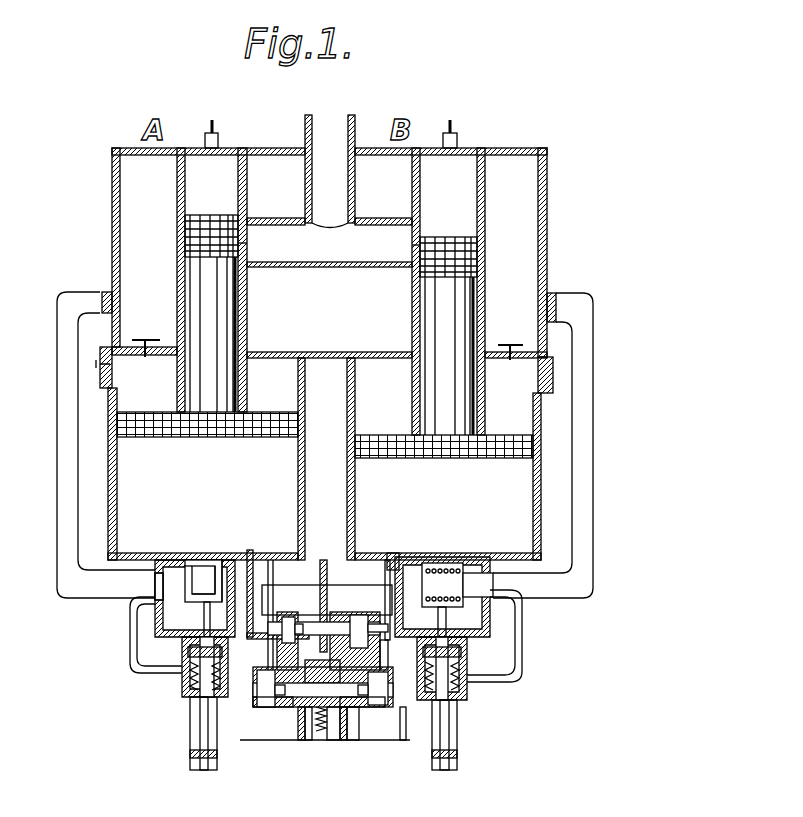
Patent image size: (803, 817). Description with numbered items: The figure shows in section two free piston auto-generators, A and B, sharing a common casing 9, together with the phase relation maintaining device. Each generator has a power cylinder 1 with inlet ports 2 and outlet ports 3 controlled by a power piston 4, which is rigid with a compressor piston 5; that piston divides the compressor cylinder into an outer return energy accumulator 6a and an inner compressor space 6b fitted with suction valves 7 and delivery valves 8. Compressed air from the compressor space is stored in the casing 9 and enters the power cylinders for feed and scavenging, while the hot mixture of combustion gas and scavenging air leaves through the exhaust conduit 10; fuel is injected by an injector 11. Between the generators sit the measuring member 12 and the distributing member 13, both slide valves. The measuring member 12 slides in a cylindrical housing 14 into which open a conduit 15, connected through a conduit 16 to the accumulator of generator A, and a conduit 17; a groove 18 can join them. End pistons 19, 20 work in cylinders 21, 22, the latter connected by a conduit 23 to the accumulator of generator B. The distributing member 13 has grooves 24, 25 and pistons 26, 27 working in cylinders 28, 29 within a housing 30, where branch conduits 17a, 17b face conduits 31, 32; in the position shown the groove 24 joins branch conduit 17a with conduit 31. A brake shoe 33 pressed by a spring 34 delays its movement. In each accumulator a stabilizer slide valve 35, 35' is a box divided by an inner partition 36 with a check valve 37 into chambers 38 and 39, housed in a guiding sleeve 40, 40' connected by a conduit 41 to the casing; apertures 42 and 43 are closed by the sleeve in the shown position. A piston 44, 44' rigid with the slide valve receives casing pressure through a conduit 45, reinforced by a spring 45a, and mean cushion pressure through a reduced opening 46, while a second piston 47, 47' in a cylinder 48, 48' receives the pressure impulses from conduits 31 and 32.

The power cylinder 1 is at (246, 196).
The inlet ports 2 is at (185, 245).
The outlet ports 3 is at (247, 243).
The power piston 4 is at (205, 382).
The compressor piston 5 is at (163, 430).
The return energy pneumatic accumulator 6a is at (118, 458).
The compressor space 6b is at (302, 382).
The suction valves 7 is at (100, 360).
The delivery valves 8 is at (145, 340).
The casing 9 is at (113, 214).
The exhaust conduit 10 is at (330, 142).
The injector 11 is at (219, 141).
The measuring member 12 is at (324, 618).
The distributing member 13 is at (306, 735).
The cylindrical housing 14 is at (335, 622).
The conduit 15 is at (276, 605).
The conduit 16 is at (269, 571).
The conduit 17 is at (300, 652).
The branch conduit 17a is at (280, 710).
The branch conduit 17b is at (348, 702).
The groove 18 is at (372, 657).
The piston 19 is at (282, 632).
The piston 20 is at (358, 616).
The cylinder 21 is at (280, 645).
The cylinder 22 is at (388, 626).
The conduit 23 is at (395, 562).
The groove 24 is at (290, 706).
The groove 25 is at (340, 720).
The piston 26 is at (262, 692).
The piston 27 is at (370, 700).
The cylinder 28 is at (257, 683).
The cylinder 29 is at (388, 692).
The housing 30 is at (360, 720).
The conduit 31 is at (272, 741).
The conduit 32 is at (404, 741).
The shoe 33 is at (320, 735).
The spring 34 is at (330, 735).
The slide valve 35 is at (214, 548).
The slide valve 35' is at (442, 569).
The inner partition 36 is at (226, 578).
The check valve 37 is at (218, 572).
The chamber 38 is at (203, 562).
The chamber 39 is at (205, 604).
The guiding sleeve 40 is at (146, 560).
The guiding sleeve 40' is at (479, 563).
The conduit 41 is at (58, 401).
The apertures 42 is at (195, 564).
The apertures 43 is at (135, 600).
The piston 44 is at (181, 656).
The piston 44' is at (469, 645).
The conduit 45 is at (133, 630).
The spring 45a is at (188, 682).
The opening 46 is at (220, 640).
The second piston 47 is at (179, 754).
The second piston 47' is at (474, 754).
The cylinder 48 is at (181, 733).
The cylinder 48' is at (474, 735).